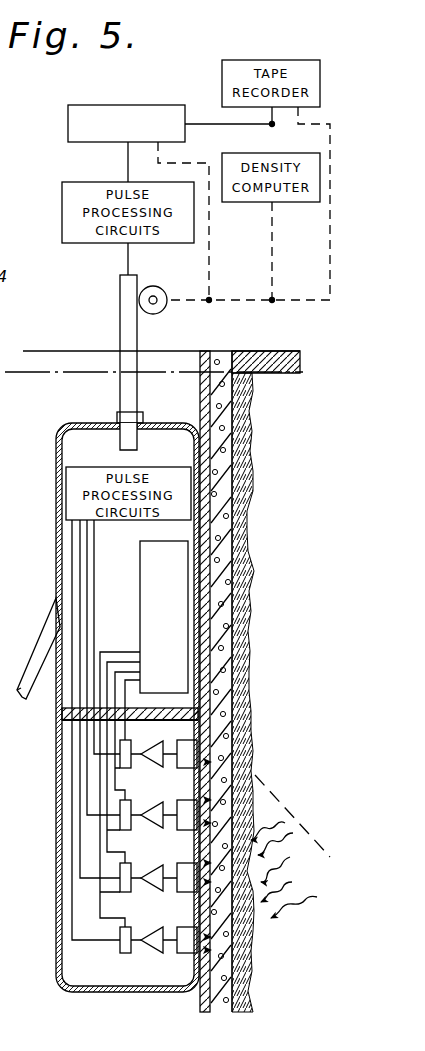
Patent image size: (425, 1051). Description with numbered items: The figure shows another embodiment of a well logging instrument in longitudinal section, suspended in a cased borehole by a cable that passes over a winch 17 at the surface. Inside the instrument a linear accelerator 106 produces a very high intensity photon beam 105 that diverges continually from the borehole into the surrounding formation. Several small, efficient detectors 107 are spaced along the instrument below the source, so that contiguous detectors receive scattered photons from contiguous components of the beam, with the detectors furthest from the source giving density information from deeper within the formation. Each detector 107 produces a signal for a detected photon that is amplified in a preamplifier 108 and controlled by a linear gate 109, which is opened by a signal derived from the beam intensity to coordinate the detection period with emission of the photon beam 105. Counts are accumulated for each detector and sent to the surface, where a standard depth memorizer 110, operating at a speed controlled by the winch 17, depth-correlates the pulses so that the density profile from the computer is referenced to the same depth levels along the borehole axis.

The depth memorizer 110 is at (83, 105).
The winch 17 is at (162, 312).
The photon beam 105 is at (270, 793).
The linear accelerator 106 is at (147, 599).
The detectors 107 is at (195, 770).
The preamplifier 108 is at (147, 754).
The linear gates 109 is at (120, 808).